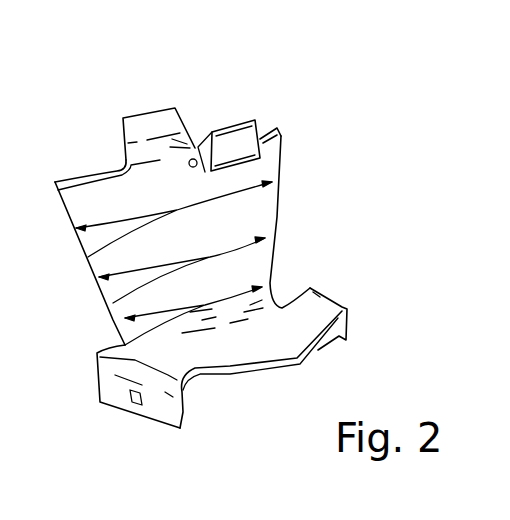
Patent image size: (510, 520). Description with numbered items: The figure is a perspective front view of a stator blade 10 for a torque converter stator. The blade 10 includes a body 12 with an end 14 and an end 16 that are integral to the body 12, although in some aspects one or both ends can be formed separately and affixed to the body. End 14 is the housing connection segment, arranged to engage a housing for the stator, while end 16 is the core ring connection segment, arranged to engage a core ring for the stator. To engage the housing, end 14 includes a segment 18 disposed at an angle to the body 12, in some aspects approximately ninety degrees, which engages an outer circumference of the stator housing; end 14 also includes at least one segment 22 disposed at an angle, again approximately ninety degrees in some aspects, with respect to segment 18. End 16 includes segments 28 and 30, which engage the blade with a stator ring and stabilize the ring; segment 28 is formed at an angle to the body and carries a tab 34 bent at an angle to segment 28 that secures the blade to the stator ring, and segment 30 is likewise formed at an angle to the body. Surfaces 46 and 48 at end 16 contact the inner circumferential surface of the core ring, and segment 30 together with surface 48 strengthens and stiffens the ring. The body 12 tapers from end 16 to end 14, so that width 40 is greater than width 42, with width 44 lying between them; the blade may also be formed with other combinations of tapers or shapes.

The stator blade 10 is at (303, 87).
The body 12 is at (250, 217).
The end 14 is at (232, 390).
The end 16 is at (207, 107).
The segment 18 is at (260, 340).
The segment 22 is at (115, 400).
The segment 28 is at (248, 122).
The segment 30 is at (122, 117).
The tab 34 is at (240, 148).
The width 40 is at (88, 257).
The width 42 is at (123, 344).
The width 44 is at (113, 303).
The surface 46 is at (190, 155).
The surface 48 is at (160, 127).